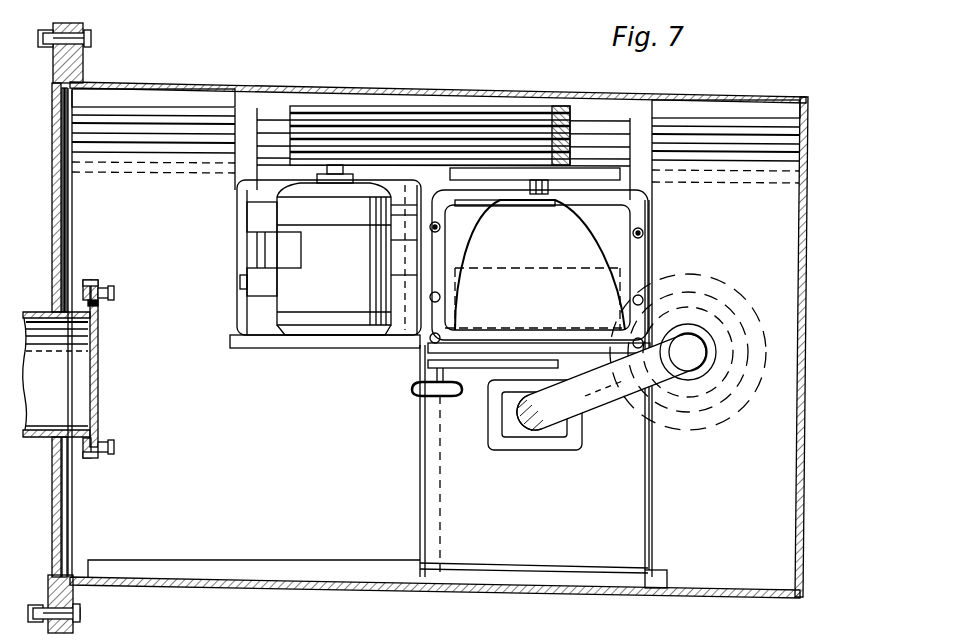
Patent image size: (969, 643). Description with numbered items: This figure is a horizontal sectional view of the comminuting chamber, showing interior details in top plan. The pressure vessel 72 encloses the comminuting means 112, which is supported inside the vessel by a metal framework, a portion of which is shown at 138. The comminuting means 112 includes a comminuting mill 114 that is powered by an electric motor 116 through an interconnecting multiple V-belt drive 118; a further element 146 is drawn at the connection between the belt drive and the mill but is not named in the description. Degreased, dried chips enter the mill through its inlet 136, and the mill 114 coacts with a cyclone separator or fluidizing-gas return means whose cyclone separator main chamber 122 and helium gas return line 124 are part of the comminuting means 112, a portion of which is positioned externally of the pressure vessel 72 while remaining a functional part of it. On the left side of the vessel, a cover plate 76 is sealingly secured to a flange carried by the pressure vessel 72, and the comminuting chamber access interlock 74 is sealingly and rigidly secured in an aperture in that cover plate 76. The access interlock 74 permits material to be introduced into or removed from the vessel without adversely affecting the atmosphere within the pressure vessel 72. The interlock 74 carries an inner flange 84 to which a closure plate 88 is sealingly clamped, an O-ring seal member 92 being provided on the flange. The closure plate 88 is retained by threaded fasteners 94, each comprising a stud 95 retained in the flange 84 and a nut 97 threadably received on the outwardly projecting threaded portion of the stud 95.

The pressure vessel 72 is at (222, 83).
The comminuting chamber access interlock 74 is at (50, 440).
The cover plate 76 is at (67, 225).
The inner flange 84 is at (88, 280).
The closure plate 88 is at (100, 369).
The O-ring seal member 92 is at (100, 304).
The threaded fasteners 94 is at (116, 296).
The stud 95 is at (82, 450).
The nut 97 is at (104, 468).
The comminuting means 112 is at (660, 262).
The comminuting mill 114 is at (524, 261).
The electric motor 116 is at (340, 256).
The multiple V-belt drive 118 is at (400, 107).
The cyclone separator main chamber 122 is at (700, 410).
The helium gas return line 124 is at (620, 402).
The inlet 136 is at (553, 450).
The metal framework 138 is at (166, 100).
The connector 146 is at (548, 196).